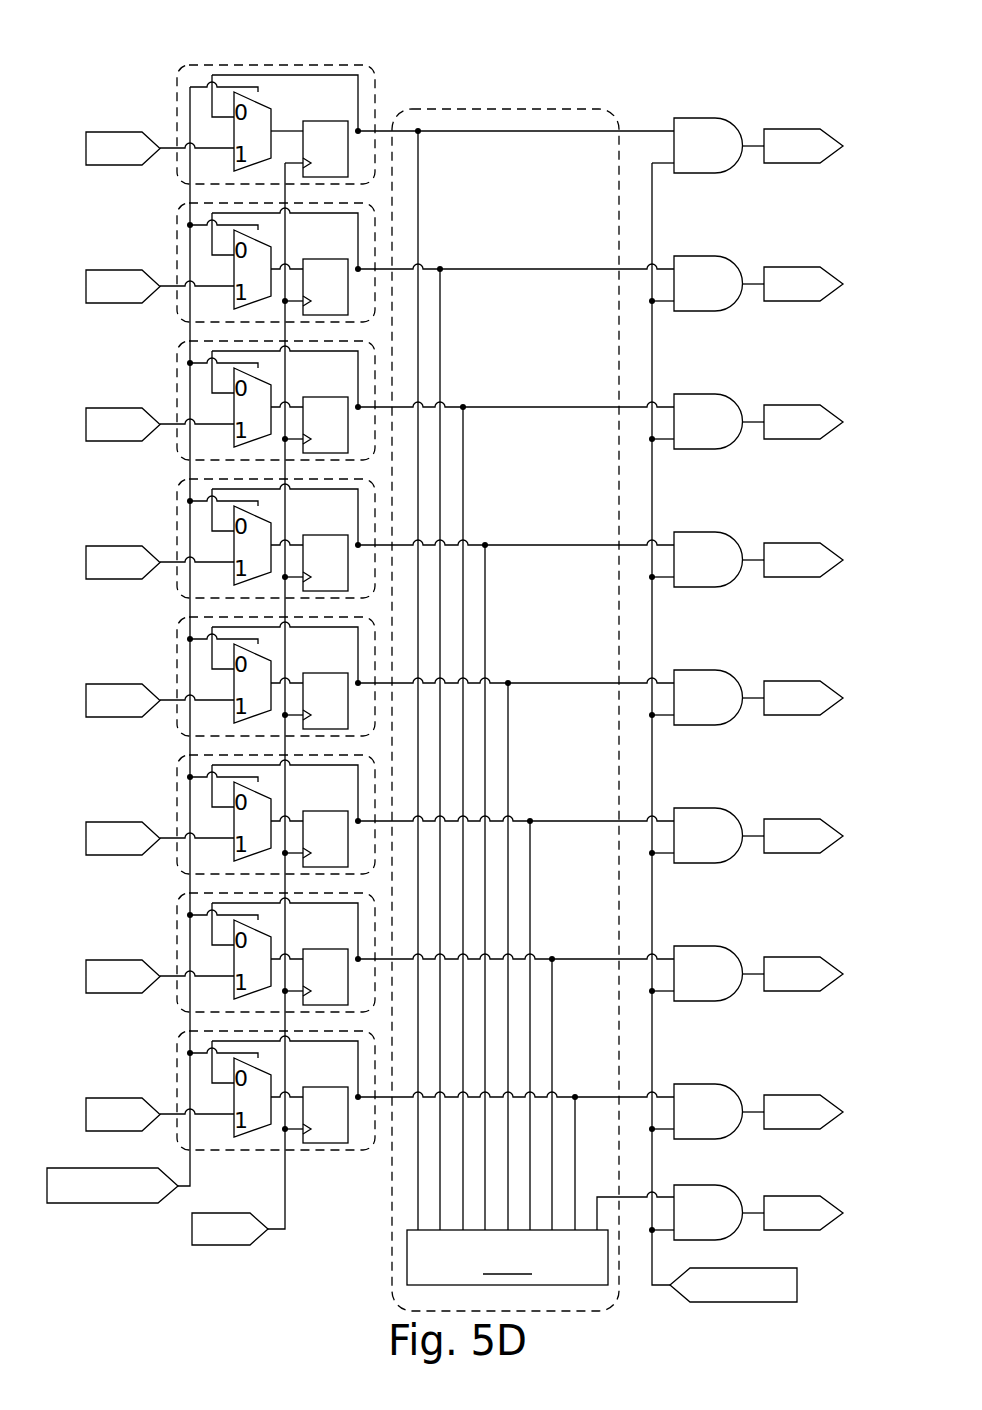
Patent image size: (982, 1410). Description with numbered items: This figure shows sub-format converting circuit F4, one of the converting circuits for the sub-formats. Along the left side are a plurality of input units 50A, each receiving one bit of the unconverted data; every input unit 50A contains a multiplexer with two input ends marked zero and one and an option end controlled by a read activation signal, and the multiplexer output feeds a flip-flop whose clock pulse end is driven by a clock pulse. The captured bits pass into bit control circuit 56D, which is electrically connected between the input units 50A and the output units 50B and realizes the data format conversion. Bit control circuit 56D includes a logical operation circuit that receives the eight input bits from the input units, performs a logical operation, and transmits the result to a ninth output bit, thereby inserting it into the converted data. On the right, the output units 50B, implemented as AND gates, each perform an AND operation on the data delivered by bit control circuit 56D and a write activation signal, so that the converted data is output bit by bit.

The input units 50A is at (272, 65).
The bit control circuit 56D is at (532, 109).
The output units 50B is at (690, 118).
The sub-format converting circuit F4 is at (598, 66).